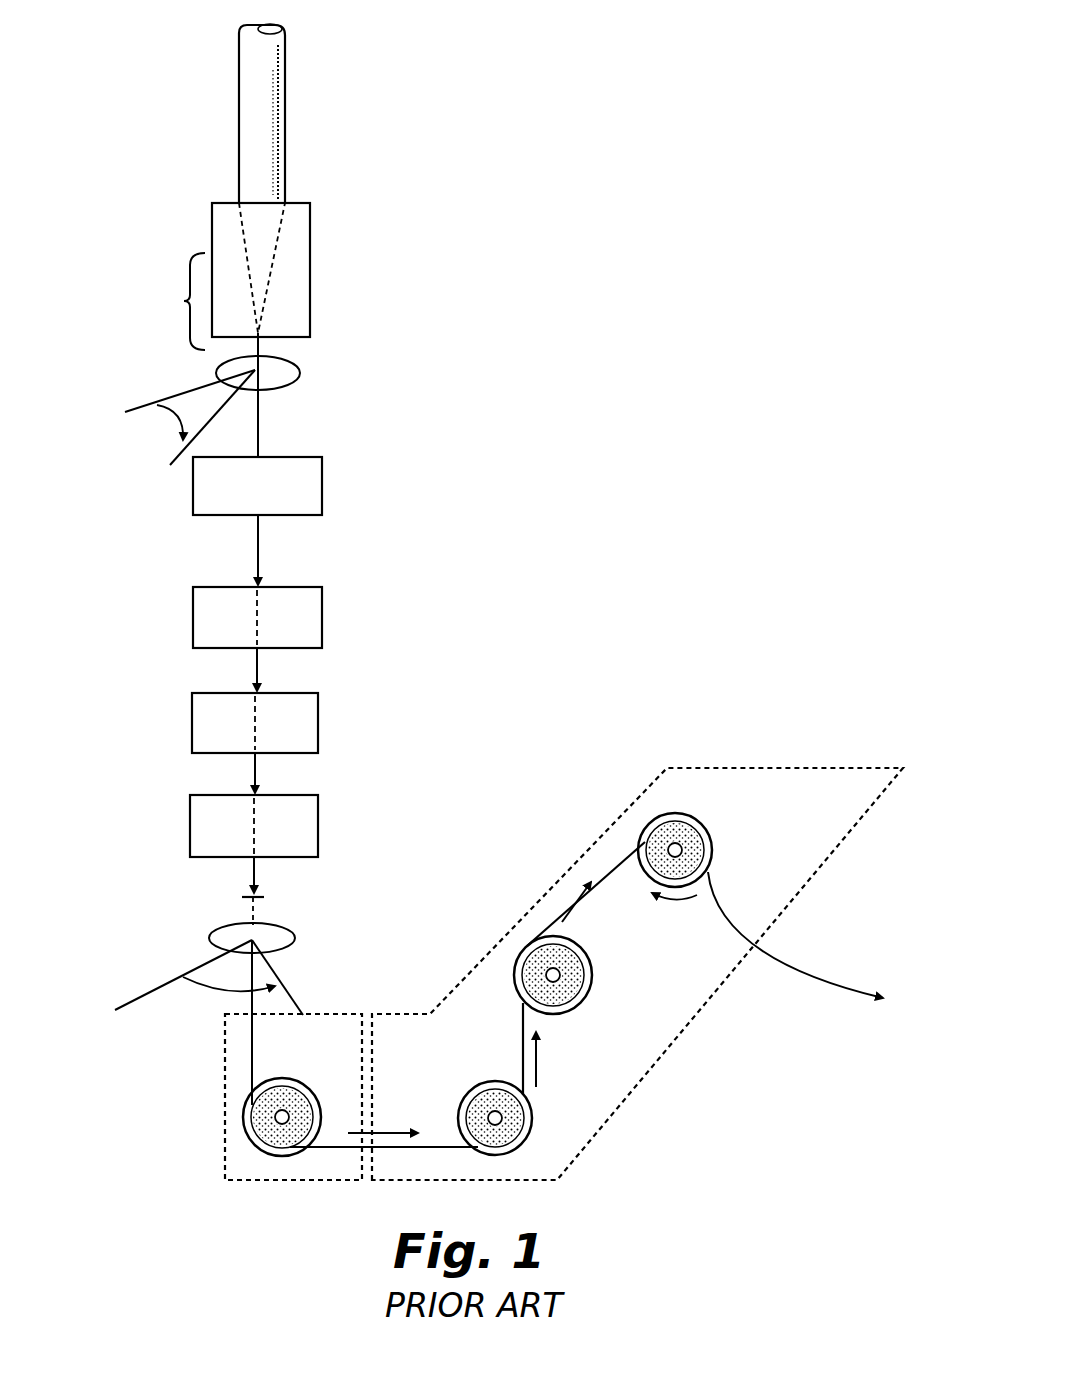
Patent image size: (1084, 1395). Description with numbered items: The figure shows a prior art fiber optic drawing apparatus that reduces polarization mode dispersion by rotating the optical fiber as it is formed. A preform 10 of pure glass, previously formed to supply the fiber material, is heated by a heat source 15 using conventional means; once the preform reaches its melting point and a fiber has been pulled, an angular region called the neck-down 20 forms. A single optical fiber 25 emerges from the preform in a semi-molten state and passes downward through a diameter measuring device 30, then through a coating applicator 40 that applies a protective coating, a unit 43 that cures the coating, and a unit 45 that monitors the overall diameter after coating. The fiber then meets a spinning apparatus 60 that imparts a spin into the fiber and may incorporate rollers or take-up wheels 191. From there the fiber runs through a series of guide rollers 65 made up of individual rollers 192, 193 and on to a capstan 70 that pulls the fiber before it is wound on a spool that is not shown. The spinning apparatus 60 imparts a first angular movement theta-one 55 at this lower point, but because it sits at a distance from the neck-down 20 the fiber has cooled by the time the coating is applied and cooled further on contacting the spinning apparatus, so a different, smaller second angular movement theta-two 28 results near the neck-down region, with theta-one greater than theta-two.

The preform 10 is at (238, 80).
The heat source 15 is at (310, 245).
The neck-down 20 is at (151, 296).
The optical fiber 25 is at (258, 558).
The angular movement θ2 28 is at (125, 455).
The diameter measuring device 30 is at (322, 478).
The coating applicator 40 is at (193, 613).
The curing unit 43 is at (192, 727).
The diameter monitoring unit 45 is at (190, 828).
The angular movement θ1 55 is at (185, 1020).
The spinning apparatus 60 is at (238, 1181).
The guide rollers 65 is at (557, 882).
The capstan 70 is at (712, 840).
The rollers or take-up wheels 191 is at (286, 1080).
The guide roller 192 is at (485, 1082).
The guide roller 193 is at (592, 970).